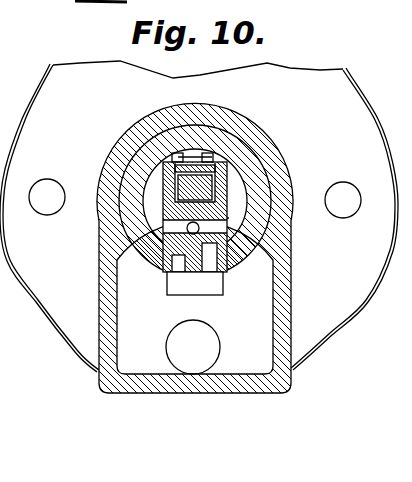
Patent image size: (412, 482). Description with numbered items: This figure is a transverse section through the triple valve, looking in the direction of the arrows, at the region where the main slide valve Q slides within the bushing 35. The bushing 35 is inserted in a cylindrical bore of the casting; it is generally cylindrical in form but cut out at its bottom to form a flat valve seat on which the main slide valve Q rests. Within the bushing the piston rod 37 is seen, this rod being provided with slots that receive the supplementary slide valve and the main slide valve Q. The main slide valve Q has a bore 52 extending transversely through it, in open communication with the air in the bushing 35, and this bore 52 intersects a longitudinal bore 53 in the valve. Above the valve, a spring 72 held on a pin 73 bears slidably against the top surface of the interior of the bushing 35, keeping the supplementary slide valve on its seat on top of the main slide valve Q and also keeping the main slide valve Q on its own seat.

The bushing 35 is at (198, 128).
The spring 72 is at (212, 150).
The pin 73 is at (225, 162).
The piston rod 37 is at (203, 188).
The bore 52 is at (164, 227).
The longitudinal bore 53 is at (203, 228).
The main slide valve Q is at (228, 218).